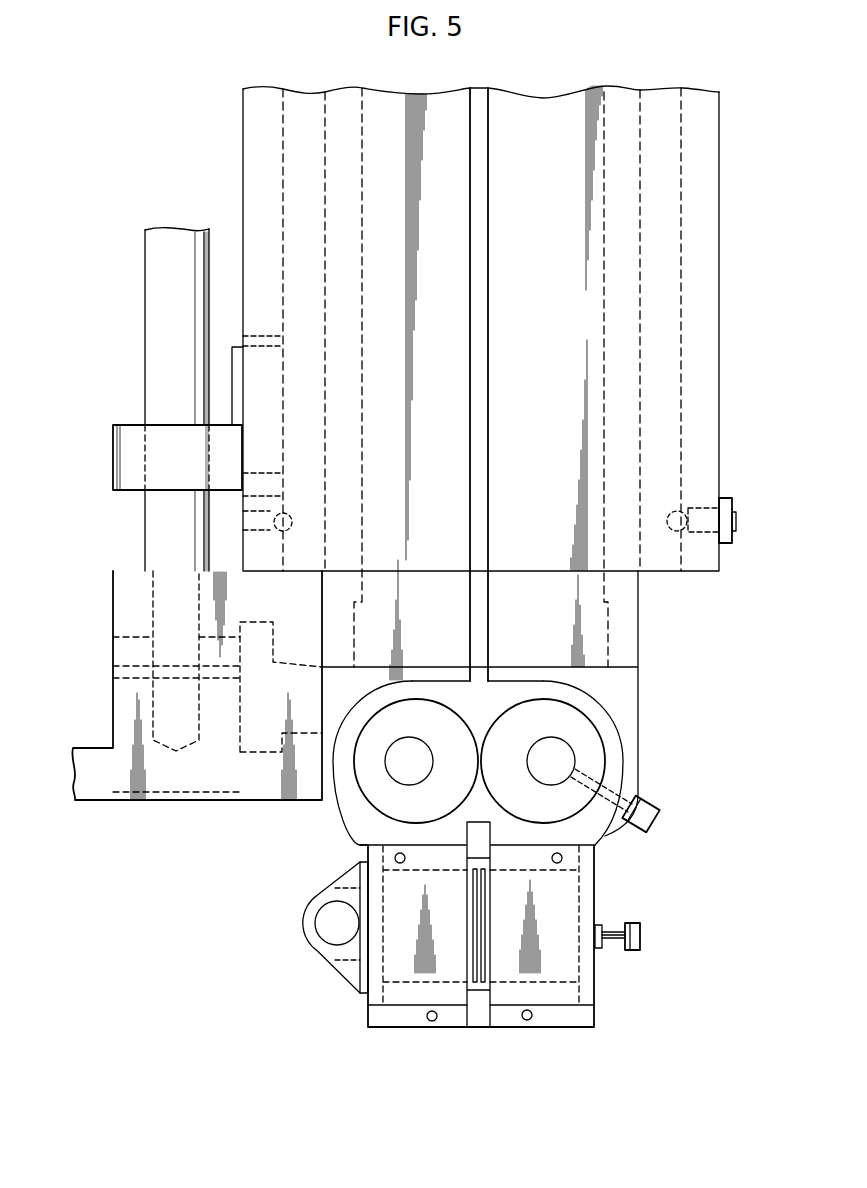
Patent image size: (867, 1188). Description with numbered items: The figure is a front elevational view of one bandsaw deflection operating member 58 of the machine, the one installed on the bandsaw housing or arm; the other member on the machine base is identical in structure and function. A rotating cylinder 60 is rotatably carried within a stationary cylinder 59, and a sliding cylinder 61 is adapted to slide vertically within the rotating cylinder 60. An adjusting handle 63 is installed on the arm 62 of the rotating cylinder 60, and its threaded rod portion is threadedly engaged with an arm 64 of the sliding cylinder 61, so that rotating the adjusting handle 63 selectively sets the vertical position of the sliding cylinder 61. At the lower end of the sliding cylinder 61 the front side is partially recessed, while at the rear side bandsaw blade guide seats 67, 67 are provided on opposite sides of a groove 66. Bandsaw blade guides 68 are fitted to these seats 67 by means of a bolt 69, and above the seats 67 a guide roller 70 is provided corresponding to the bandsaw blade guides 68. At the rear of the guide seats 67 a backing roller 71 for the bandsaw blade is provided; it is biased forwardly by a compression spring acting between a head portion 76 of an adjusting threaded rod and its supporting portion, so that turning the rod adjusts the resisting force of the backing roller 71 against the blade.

The bandsaw deflection operating member 58 is at (719, 297).
The stationary cylinder 59 is at (250, 157).
The rotating cylinder 60 is at (290, 202).
The sliding cylinder 61 is at (340, 120).
The arm 62 is at (132, 463).
The adjusting handle 63 is at (160, 310).
The arm 64 is at (120, 602).
The groove 66 is at (480, 1018).
The bandsaw blade guide seat 67 is at (378, 1020).
The bandsaw blade guide 68 is at (487, 910).
The bolt 69 is at (640, 933).
The guide roller 70 is at (585, 740).
The backing roller 71 is at (477, 1022).
The head portion 76 is at (333, 925).